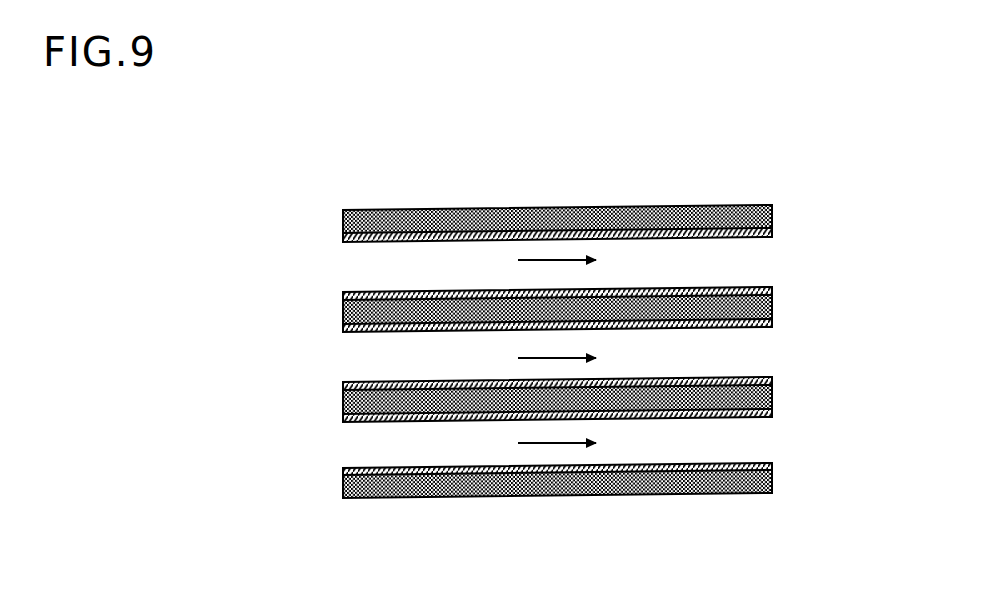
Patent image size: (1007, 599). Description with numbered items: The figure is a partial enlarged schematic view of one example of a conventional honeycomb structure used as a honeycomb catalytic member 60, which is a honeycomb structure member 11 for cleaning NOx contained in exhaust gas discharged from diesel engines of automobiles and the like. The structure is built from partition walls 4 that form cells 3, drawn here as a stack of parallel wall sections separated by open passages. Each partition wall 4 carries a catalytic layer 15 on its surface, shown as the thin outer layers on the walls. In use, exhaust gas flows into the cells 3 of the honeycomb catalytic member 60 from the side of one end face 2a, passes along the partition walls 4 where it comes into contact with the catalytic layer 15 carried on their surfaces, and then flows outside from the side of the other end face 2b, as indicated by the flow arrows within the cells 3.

The honeycomb catalytic member 60 is at (632, 130).
The honeycomb structure member 11 is at (555, 342).
The one end face 2a is at (346, 189).
The other end face 2b is at (773, 184).
The partition wall 4 is at (498, 352).
The catalytic layer 15 is at (415, 292).
The cell 3 is at (437, 353).